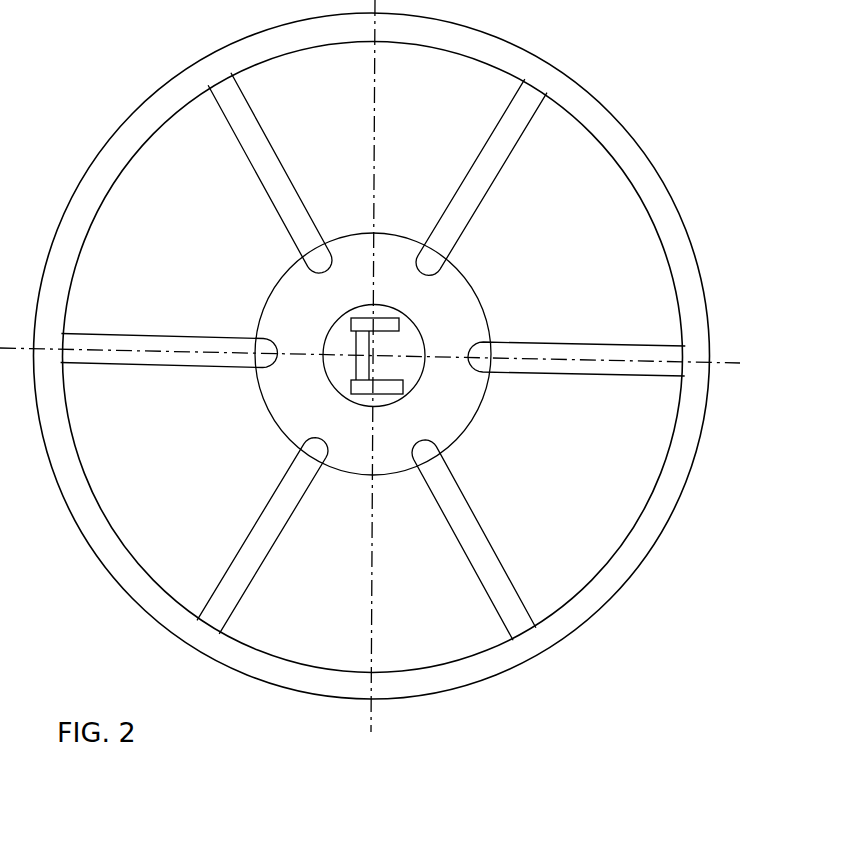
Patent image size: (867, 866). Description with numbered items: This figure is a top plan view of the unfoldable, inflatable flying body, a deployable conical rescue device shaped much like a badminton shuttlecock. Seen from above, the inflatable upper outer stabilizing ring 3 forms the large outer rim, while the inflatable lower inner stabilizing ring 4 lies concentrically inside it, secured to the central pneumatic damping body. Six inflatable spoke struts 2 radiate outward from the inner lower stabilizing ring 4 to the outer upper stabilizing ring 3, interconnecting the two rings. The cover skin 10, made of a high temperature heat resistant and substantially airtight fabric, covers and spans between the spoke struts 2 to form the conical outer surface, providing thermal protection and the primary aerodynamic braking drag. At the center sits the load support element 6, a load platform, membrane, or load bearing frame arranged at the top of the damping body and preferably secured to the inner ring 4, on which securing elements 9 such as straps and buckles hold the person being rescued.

The spoke struts 2 is at (465, 206).
The upper outer stabilizing ring 3 is at (662, 208).
The lower inner stabilizing ring 4 is at (282, 400).
The load support element 6 is at (410, 368).
The securing elements 9 is at (385, 388).
The cover skin 10 is at (576, 318).